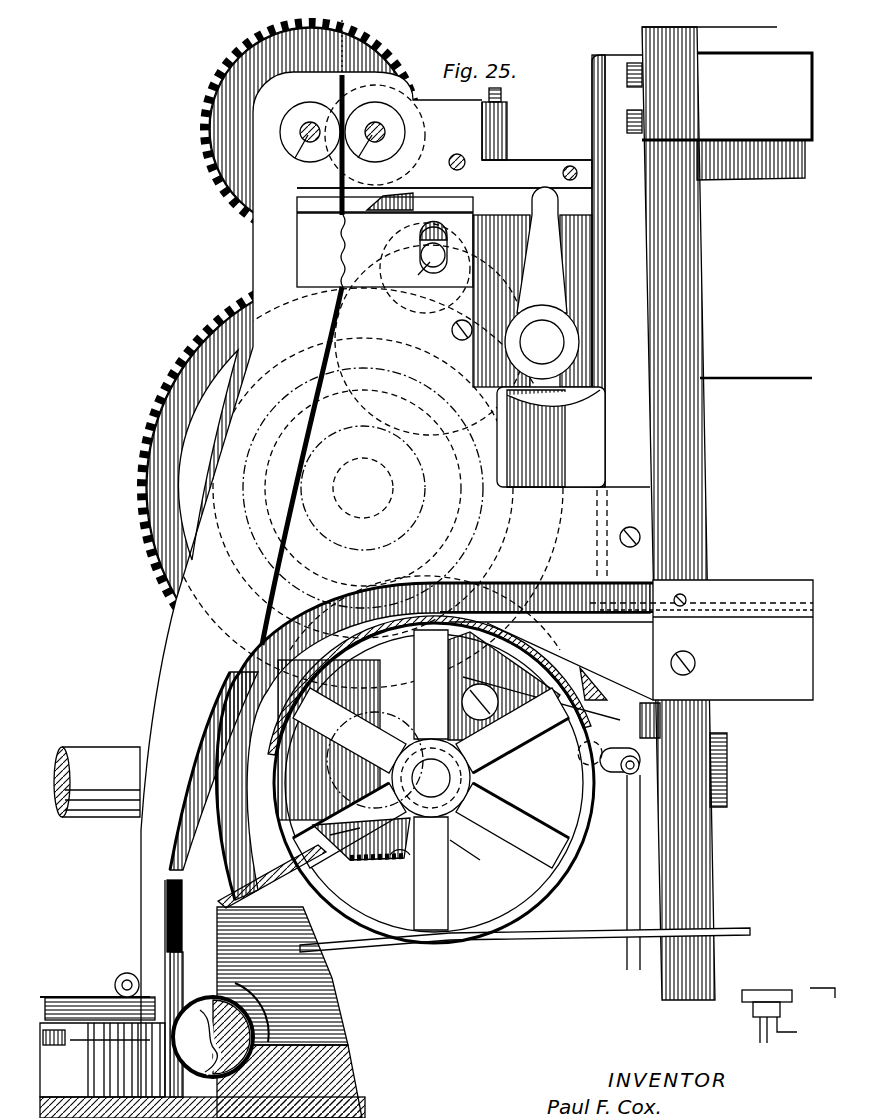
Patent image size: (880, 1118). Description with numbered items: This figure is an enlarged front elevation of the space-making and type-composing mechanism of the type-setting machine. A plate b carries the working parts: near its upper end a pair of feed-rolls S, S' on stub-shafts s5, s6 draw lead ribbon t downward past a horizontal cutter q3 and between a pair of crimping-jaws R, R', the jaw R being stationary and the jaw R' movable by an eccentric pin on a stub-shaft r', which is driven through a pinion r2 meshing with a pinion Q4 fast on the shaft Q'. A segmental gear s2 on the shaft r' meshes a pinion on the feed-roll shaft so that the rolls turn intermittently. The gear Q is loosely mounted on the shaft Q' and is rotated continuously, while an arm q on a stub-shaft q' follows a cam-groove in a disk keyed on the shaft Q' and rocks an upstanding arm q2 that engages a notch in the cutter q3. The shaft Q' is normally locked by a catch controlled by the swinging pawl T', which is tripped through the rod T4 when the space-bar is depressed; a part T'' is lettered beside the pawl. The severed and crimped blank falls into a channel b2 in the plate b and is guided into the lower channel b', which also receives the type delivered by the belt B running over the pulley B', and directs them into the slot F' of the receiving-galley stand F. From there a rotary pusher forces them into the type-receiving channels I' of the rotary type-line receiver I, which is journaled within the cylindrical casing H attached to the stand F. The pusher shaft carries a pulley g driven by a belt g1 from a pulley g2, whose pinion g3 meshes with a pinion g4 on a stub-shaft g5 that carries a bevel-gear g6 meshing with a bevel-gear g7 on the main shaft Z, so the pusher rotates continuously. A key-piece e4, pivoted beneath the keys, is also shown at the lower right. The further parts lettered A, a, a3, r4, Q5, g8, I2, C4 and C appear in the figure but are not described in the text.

The feed-roll S' is at (311, 120).
The feed-roll S is at (310, 122).
The stub-shaft s5 is at (294, 159).
The stub-shaft s6 is at (362, 162).
The large gear wheel a is at (213, 300).
The gear hub a3 is at (208, 455).
The crimping-jaw R is at (367, 209).
The crimping-jaw R' is at (414, 248).
The stub-shaft r' is at (417, 273).
The plate r4 is at (460, 196).
The pinion r2 is at (535, 160).
The lead ribbon t is at (349, 110).
The channel b2 is at (300, 448).
The plate b is at (197, 722).
The channel b' is at (359, 689).
The pulley g2 is at (215, 716).
The shaft Q' is at (363, 488).
The pinion Q4 is at (363, 479).
The arm q is at (363, 488).
The gear Q is at (363, 494).
The gear Q5 is at (425, 618).
The main frame A is at (659, 513).
The segmental gear s2 is at (537, 124).
The cutter q3 is at (524, 196).
The upstanding arm q2 is at (560, 275).
The stub-shaft q' is at (542, 342).
The swinging pawl T' is at (448, 741).
The link T'' is at (638, 850).
The rod T4 is at (650, 845).
The belt B is at (556, 776).
The pulley B' is at (431, 779).
The block g8 is at (329, 740).
The stub-shaft g5 is at (396, 760).
The pinion g3 is at (300, 858).
The bevel-gear g7 is at (345, 855).
The pinion g4 is at (405, 858).
The bevel-gear g6 is at (445, 846).
The belt g1 is at (250, 888).
The pulley g is at (255, 985).
The main shaft Z is at (97, 782).
The cylindrical casing H is at (95, 995).
The type-receiving channel I' is at (91, 996).
The rotary type-line receiver I is at (192, 1070).
The post I2 is at (80, 1050).
The roller C4 is at (127, 973).
The slot F' is at (185, 988).
The receiving-galley stand F is at (289, 1012).
The cam C is at (232, 1052).
The key-piece e4 is at (772, 990).